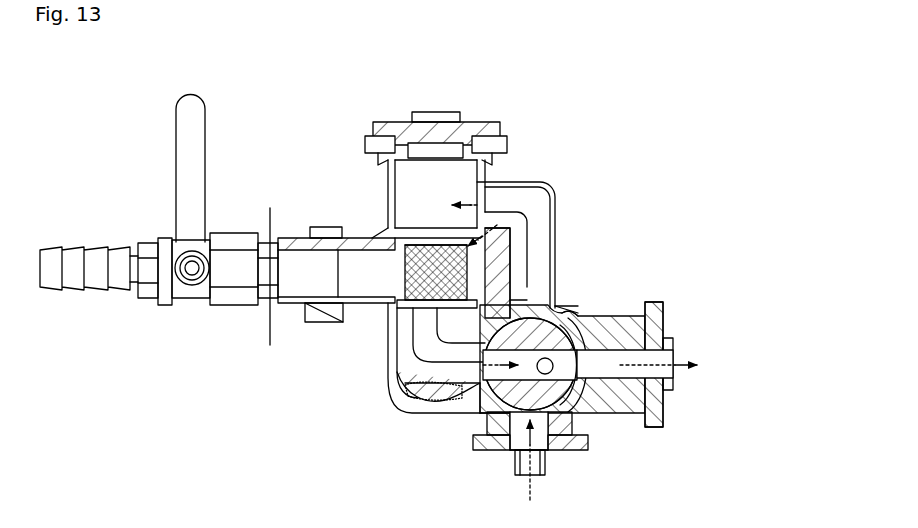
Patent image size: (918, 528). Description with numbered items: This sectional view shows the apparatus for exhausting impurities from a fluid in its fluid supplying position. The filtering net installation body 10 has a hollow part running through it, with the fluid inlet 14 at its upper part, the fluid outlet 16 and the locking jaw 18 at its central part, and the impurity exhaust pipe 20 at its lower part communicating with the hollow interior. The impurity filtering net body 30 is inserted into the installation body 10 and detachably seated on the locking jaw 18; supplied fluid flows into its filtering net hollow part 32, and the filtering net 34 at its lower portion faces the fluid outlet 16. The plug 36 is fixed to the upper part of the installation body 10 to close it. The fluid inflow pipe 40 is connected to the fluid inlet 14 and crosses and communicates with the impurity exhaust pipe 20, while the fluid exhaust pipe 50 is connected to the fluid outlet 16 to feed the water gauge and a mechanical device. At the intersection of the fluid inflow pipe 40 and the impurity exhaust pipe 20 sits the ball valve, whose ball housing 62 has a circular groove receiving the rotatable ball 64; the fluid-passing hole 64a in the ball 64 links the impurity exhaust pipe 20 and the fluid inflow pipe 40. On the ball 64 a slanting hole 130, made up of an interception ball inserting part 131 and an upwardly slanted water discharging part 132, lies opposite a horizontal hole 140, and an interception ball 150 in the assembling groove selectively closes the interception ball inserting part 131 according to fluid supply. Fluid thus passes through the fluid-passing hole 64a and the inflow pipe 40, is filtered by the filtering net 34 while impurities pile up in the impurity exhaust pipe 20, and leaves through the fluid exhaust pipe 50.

The filtering net installation body 10 is at (387, 185).
The fluid inlet 14 is at (487, 184).
The fluid outlet 16 is at (393, 247).
The locking jaw 18 is at (403, 377).
The impurity exhaust pipe 20 is at (408, 405).
The impurity filtering net body 30 is at (556, 186).
The filtering net hollow part 32 is at (435, 238).
The filtering net 34 is at (391, 302).
The plug 36 is at (393, 127).
The fluid inflow pipe 40 is at (556, 250).
The fluid exhaust pipe 50 is at (322, 316).
The ball housing 62 is at (483, 403).
The ball 64 is at (560, 382).
The fluid-passing hole 64a is at (668, 318).
The slanting hole 130 is at (793, 222).
The interception ball inserting part 131 is at (585, 317).
The water discharging part 132 is at (556, 305).
The horizontal hole 140 is at (508, 413).
The interception ball 150 is at (657, 410).